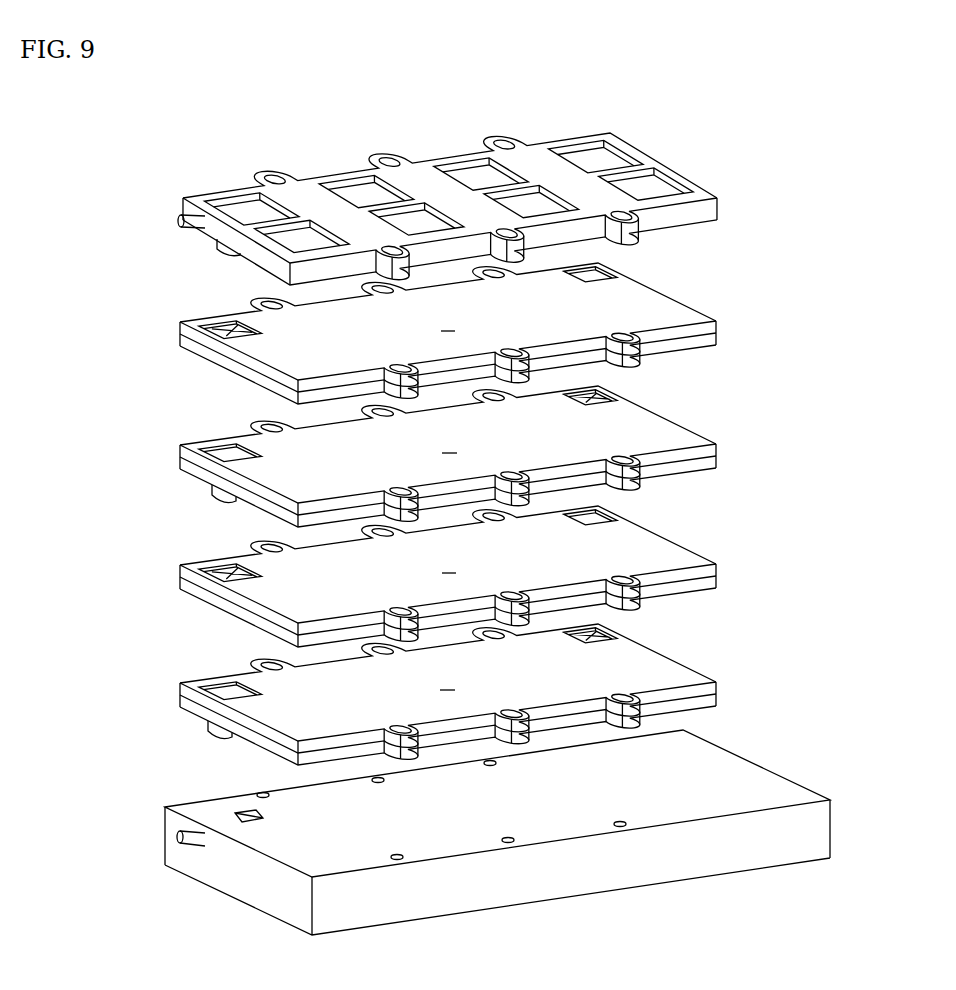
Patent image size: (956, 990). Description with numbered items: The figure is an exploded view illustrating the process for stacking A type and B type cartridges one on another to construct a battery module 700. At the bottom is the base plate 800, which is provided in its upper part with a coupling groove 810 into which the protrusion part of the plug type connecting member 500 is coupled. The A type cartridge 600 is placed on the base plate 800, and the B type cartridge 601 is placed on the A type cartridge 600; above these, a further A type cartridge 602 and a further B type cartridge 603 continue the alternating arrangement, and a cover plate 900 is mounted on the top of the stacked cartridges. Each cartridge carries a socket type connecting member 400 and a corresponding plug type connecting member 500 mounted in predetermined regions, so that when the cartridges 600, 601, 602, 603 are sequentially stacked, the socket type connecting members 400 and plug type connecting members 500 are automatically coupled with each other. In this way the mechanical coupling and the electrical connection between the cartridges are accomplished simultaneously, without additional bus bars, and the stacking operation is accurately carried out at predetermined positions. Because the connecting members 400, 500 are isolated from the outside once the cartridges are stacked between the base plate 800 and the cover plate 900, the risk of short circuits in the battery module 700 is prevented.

The battery module 700 is at (74, 175).
The cover plate 900 is at (208, 240).
The B type cartridge 603 is at (665, 292).
The A type cartridge 602 is at (673, 420).
The B type cartridge 601 is at (675, 540).
The A type cartridge 600 is at (672, 660).
The socket type connecting member 400 is at (212, 562).
The plug type connecting member 500 is at (203, 727).
The base plate 800 is at (587, 877).
The coupling groove 810 is at (262, 812).